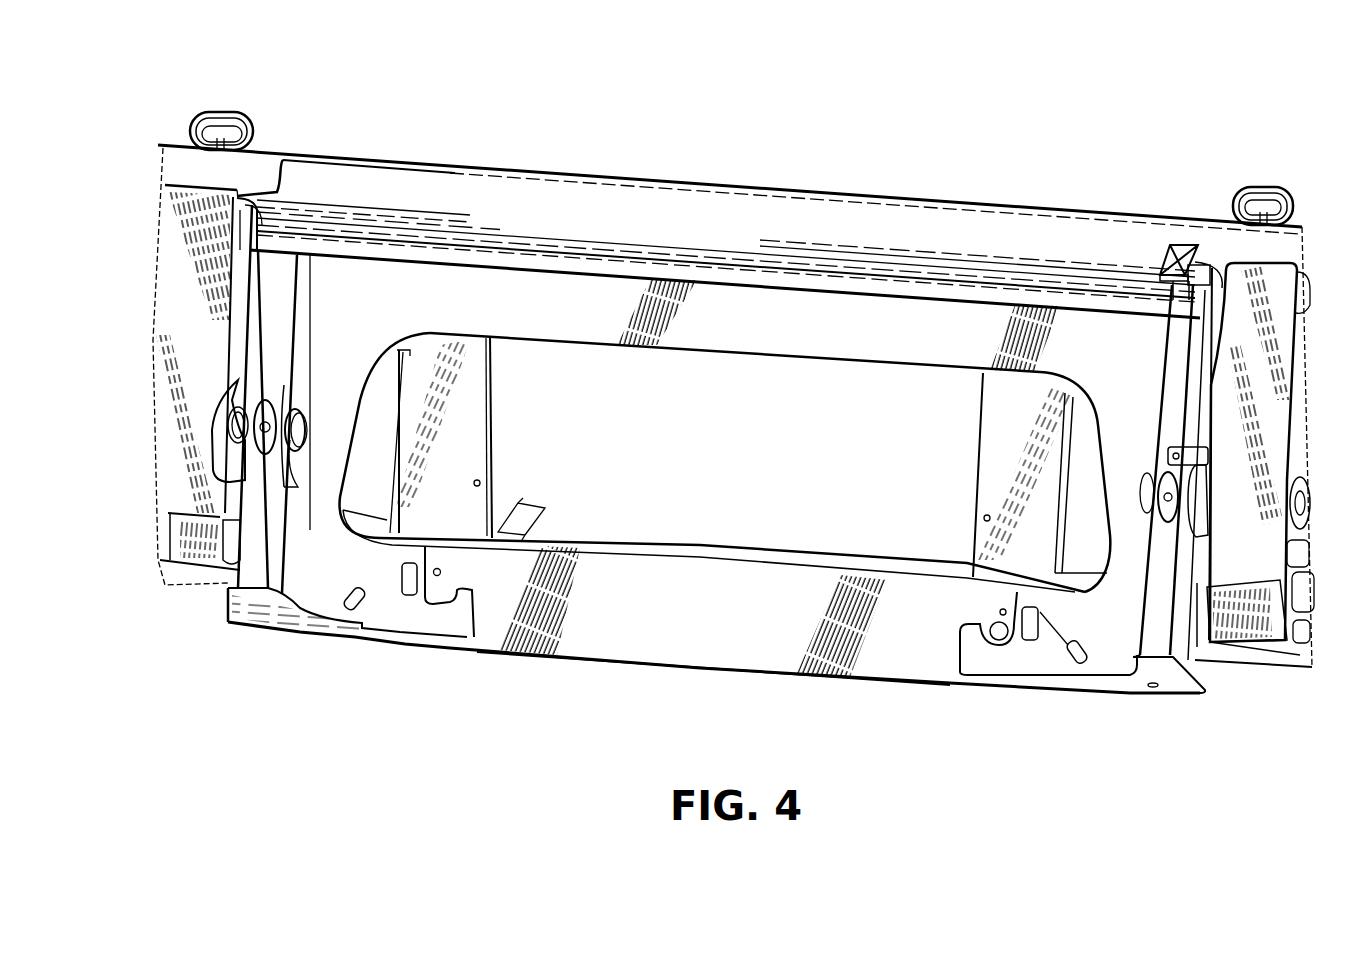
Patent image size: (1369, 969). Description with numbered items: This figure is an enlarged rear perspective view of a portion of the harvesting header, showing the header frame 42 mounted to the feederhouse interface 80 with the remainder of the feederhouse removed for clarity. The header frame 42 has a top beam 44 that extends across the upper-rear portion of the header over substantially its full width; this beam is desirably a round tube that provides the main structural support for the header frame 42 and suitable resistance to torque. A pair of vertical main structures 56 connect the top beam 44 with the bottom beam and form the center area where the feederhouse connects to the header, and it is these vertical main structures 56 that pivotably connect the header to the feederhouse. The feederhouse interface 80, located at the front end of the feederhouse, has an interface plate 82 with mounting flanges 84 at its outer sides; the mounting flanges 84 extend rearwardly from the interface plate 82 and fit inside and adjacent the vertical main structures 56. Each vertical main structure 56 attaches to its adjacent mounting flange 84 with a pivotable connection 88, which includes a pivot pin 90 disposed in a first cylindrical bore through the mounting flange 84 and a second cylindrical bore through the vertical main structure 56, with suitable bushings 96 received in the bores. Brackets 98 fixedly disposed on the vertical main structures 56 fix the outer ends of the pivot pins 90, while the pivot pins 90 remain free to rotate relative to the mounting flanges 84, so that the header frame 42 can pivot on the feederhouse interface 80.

The header frame 42 is at (495, 150).
The top beam 44 is at (618, 177).
The vertical main structure 56 is at (293, 275).
The feederhouse interface 80 is at (540, 655).
The interface plate 82 is at (805, 672).
The mounting flange 84 is at (300, 275).
The pivotable connection 88 is at (262, 366).
The pivot pin 90 is at (303, 412).
The bushing 96 is at (290, 456).
The bracket 98 is at (235, 383).